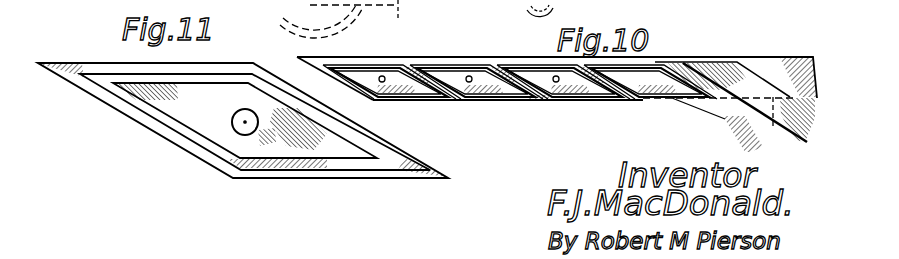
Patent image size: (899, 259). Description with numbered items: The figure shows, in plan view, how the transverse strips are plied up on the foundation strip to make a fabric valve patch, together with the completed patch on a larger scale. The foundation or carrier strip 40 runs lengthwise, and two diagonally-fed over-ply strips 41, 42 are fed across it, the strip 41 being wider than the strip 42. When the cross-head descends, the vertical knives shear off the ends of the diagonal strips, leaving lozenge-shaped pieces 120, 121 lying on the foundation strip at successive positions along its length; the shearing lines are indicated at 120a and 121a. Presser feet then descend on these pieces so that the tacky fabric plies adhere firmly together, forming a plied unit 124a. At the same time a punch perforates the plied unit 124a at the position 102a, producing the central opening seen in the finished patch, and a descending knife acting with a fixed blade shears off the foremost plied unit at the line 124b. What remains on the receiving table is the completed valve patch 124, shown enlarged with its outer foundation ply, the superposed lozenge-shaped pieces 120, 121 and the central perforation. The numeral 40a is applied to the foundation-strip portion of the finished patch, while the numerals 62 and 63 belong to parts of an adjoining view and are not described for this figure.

In FIG. 10, the foundation strip 40 is at (773, 57).
In FIG. 11, the strip body 40a is at (370, 172).
In FIG. 10, the over-ply strip 41 is at (745, 75).
In FIG. 10, the over-ply strip 42 is at (702, 120).
In FIG. 10, the disc 62 is at (527, 3).
In FIG. 10, the marker 63 is at (453, 0).
In FIG. 10, the perforation position 102a is at (545, 103).
In FIG. 11, the lozenge-shaped piece 120 is at (340, 163).
In FIG. 10, the lozenge-shaped piece 120 is at (497, 62).
In FIG. 10, the shearing line 120a is at (778, 132).
In FIG. 11, the lozenge-shaped piece 121 is at (283, 148).
In FIG. 10, the lozenge-shaped piece 121 is at (537, 75).
In FIG. 10, the shearing line 121a is at (672, 98).
In FIG. 11, the valve patch 124 is at (176, 148).
In FIG. 10, the plied unit 124a is at (588, 100).
In FIG. 10, the severing line 124b is at (453, 105).